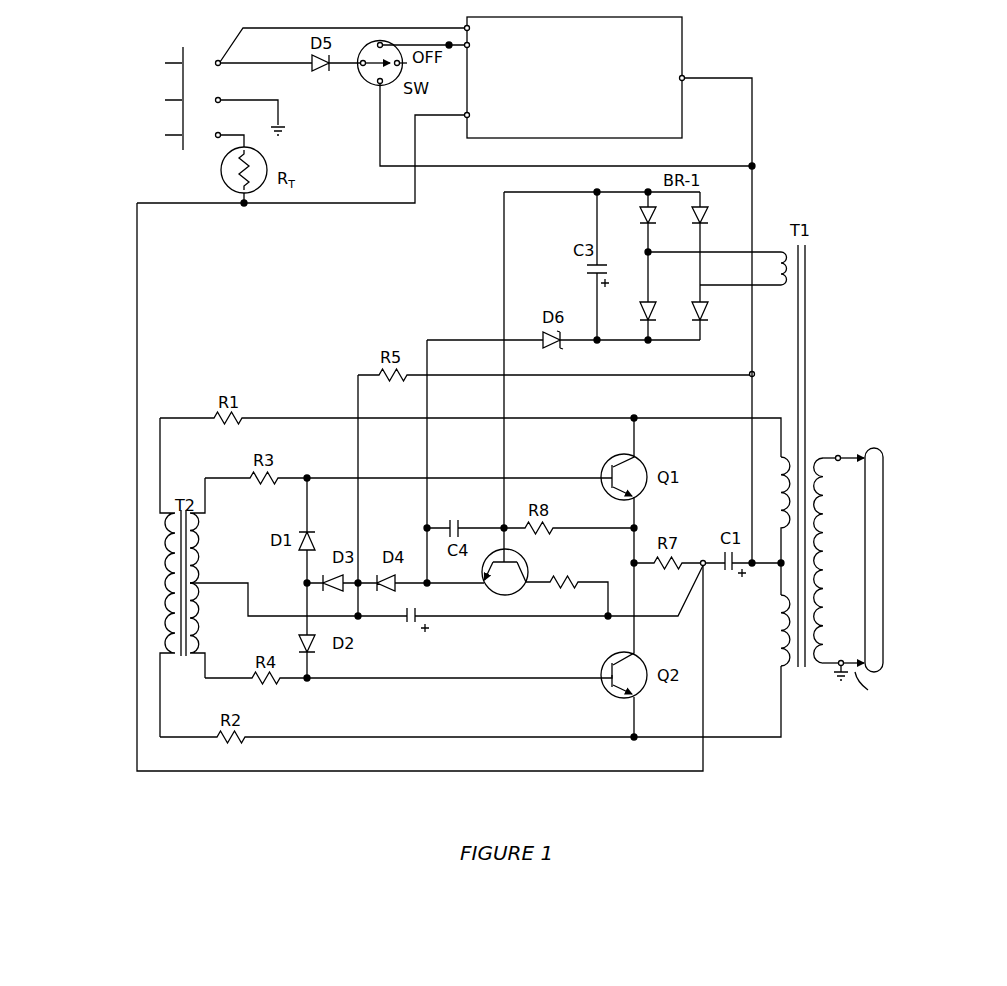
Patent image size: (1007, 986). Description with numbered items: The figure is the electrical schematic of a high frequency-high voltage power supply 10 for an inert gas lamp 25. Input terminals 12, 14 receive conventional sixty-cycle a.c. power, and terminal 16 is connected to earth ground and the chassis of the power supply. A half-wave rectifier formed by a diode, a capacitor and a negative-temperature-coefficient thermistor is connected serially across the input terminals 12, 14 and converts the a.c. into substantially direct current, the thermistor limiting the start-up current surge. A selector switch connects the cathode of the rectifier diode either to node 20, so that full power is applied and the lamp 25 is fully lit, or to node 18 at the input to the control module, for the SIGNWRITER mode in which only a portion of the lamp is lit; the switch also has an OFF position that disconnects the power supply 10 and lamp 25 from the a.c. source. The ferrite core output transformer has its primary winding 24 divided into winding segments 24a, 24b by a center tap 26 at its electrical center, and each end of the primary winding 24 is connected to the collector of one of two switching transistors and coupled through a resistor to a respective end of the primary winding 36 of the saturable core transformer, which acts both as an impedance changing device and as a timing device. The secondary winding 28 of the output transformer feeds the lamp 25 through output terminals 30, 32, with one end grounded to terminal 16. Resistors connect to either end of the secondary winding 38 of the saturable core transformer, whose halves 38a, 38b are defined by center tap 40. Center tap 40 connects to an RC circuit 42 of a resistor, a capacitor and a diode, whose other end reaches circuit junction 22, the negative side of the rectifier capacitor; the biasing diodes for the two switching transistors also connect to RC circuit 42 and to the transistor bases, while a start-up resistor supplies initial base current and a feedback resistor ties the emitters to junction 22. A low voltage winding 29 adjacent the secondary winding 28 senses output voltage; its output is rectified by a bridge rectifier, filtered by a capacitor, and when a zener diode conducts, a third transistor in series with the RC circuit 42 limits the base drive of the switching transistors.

The power supply 10 is at (779, 121).
The input terminal 12 is at (216, 56).
The input terminal 14 is at (216, 126).
The ground terminal 16 is at (216, 90).
The node 18 is at (446, 38).
The node 20 is at (757, 198).
The circuit junction 22 is at (320, 207).
The primary winding 24 is at (778, 613).
The winding segment 24a is at (772, 490).
The winding segment 24b is at (778, 642).
The inert gas lamp 25 is at (862, 585).
The center tap 26 is at (775, 571).
The secondary winding 28 is at (822, 510).
The low voltage winding 29 is at (768, 290).
The output terminal 30 is at (838, 452).
The output terminal 32 is at (838, 660).
The primary winding 36 is at (163, 532).
The secondary winding 38 is at (212, 566).
The secondary winding half 38a is at (212, 533).
The secondary winding half 38b is at (212, 633).
The center tap 40 is at (212, 592).
The RC circuit 42 is at (408, 592).